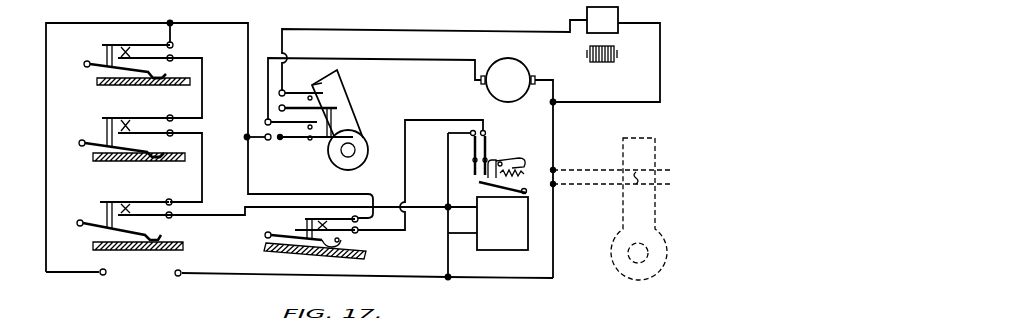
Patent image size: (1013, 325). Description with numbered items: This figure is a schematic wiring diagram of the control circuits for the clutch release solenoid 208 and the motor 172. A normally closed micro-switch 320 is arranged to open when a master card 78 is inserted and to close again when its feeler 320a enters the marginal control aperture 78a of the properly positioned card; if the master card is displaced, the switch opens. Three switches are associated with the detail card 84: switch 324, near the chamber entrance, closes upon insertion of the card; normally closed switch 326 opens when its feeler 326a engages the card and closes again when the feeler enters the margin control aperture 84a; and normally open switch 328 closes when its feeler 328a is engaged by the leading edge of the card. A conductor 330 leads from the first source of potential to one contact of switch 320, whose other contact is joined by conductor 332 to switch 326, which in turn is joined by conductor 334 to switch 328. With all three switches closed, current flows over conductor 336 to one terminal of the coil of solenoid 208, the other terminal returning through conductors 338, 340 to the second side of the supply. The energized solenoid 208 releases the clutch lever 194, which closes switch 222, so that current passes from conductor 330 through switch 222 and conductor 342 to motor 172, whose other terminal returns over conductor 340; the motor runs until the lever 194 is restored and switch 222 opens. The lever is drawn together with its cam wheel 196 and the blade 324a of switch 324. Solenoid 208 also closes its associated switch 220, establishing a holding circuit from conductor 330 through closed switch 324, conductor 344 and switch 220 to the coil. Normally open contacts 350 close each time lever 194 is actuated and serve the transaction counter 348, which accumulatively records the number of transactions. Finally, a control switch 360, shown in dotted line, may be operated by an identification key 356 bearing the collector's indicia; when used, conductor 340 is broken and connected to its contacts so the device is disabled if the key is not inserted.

The micro-switch 320 is at (120, 43).
The feeler 320a is at (163, 78).
The master card 78 is at (98, 83).
The marginal control aperture 78a is at (157, 83).
The conductor 332 is at (202, 110).
The switch 326 is at (137, 118).
The feeler 326a is at (97, 142).
The detail card 84 is at (93, 161).
The margin control aperture 84a is at (158, 159).
The conductor 334 is at (202, 187).
The switch 328 is at (110, 203).
The feeler 328a is at (93, 225).
The conductor 336 is at (237, 218).
The conductor 330 is at (46, 158).
The conductor 340 is at (350, 277).
The conductor 338 is at (447, 257).
The conductor 342 is at (414, 52).
The conductor 344 is at (453, 118).
The switch 222 is at (282, 141).
The contacts 350 is at (308, 100).
The clutch lever 194 is at (356, 110).
The cam wheel 196 is at (360, 158).
The motor 172 is at (518, 73).
The transaction counter 348 is at (588, 13).
The switch 220 is at (483, 147).
The solenoid 208 is at (498, 243).
The switch 324 is at (303, 219).
The bimetal blade 324a is at (342, 242).
The control switch 360 is at (672, 175).
The key 356 is at (662, 253).